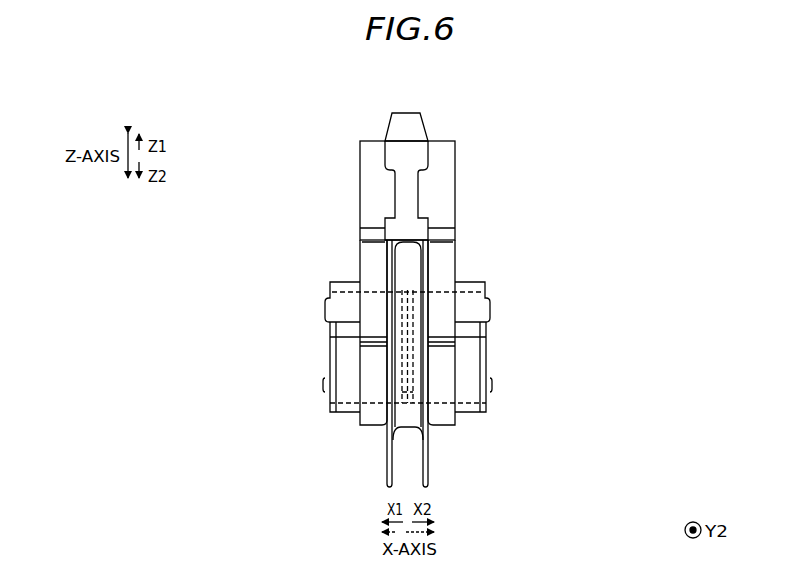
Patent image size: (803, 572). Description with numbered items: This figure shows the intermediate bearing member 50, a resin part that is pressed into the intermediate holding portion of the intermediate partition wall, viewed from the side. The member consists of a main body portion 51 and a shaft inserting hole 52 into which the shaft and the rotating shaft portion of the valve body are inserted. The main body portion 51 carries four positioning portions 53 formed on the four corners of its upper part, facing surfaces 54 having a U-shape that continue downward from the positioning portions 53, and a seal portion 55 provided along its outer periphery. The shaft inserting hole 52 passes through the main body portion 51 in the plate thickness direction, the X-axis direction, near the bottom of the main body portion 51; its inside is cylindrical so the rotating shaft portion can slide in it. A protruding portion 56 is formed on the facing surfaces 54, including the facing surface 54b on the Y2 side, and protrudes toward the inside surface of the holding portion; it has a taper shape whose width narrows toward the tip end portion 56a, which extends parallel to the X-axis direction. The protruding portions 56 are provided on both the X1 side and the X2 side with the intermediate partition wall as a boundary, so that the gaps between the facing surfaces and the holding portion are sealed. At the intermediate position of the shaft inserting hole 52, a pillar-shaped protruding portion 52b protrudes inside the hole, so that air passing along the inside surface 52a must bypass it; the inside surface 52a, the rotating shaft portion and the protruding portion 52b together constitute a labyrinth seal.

The intermediate bearing member 50 is at (520, 101).
The main body portion 51 is at (443, 150).
The shaft inserting hole 52 is at (480, 405).
The inside surface 52a is at (486, 295).
The protruding portion 52b is at (405, 299).
The positioning portions 53 is at (372, 243).
The facing surfaces 54 is at (424, 336).
The facing surface 54b is at (373, 270).
The seal portion 55 is at (387, 455).
The protruding portion 56 is at (366, 353).
The tip end portion 56a is at (375, 346).